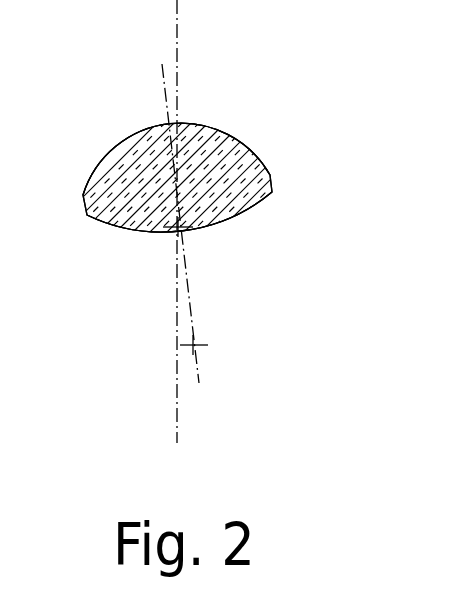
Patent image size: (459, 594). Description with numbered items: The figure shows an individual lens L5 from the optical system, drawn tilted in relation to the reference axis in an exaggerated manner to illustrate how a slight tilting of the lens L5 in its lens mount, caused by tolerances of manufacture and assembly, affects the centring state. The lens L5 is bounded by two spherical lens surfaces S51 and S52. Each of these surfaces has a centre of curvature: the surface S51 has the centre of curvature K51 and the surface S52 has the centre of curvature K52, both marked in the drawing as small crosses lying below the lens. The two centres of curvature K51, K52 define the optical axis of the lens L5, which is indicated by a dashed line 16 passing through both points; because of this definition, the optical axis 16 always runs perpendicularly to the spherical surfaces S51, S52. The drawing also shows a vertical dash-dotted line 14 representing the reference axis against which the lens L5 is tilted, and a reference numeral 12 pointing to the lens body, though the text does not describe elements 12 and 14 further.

The lens 12 is at (82, 203).
The optical axis 14 is at (177, 40).
The optical axis 16 is at (200, 408).
The lens L5 is at (277, 180).
The lens surface S51 is at (110, 147).
The lens surface S52 is at (110, 204).
The centre of curvature K51 is at (185, 229).
The centre of curvature K52 is at (197, 348).